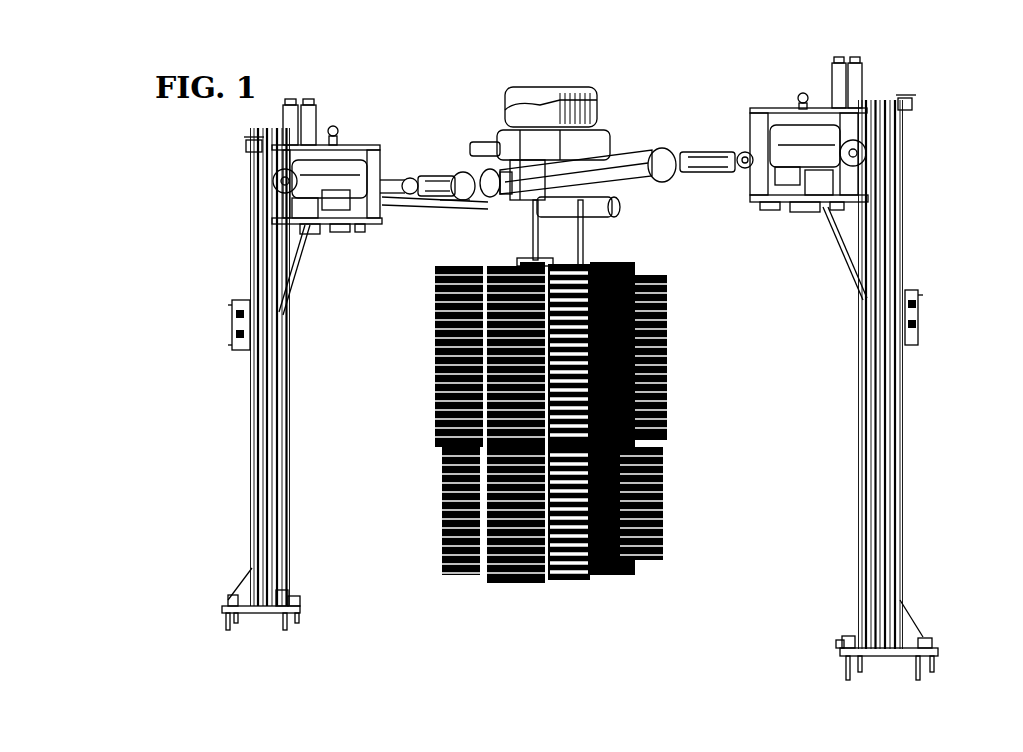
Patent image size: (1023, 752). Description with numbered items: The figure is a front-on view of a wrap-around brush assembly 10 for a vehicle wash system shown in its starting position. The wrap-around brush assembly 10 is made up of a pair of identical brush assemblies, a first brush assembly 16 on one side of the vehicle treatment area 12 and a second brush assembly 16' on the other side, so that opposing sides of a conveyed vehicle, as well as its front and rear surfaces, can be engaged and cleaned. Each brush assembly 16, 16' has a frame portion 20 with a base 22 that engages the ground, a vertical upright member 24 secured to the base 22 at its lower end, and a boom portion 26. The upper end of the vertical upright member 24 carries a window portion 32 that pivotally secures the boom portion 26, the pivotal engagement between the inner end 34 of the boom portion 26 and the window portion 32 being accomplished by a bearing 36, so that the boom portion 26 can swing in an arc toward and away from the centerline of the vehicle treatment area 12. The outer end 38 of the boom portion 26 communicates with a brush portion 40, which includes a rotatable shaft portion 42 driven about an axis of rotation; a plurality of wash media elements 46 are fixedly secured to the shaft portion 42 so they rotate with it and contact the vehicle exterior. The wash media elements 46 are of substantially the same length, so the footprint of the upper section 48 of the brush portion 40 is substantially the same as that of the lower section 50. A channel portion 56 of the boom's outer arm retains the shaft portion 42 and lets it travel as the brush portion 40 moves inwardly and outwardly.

The wrap-around brush assembly 10 is at (561, 162).
The vehicle treatment area 12 is at (572, 626).
The first brush assembly 16 is at (690, 149).
The second brush assembly 16' is at (520, 168).
The frame portion 20 is at (251, 379).
The base 22 is at (297, 604).
The vertical upright member 24 is at (288, 505).
The boom portion 26 is at (628, 170).
The window portion 32 is at (376, 160).
The inner end 34 is at (840, 168).
The bearing 36 is at (800, 133).
The outer end 38 is at (495, 175).
The brush portion 40 is at (555, 422).
The rotatable shaft portion 42 is at (533, 238).
The wash media elements 46 is at (438, 340).
The upper section 48 is at (438, 298).
The lower section 50 is at (440, 486).
The channel portion 56 is at (458, 206).